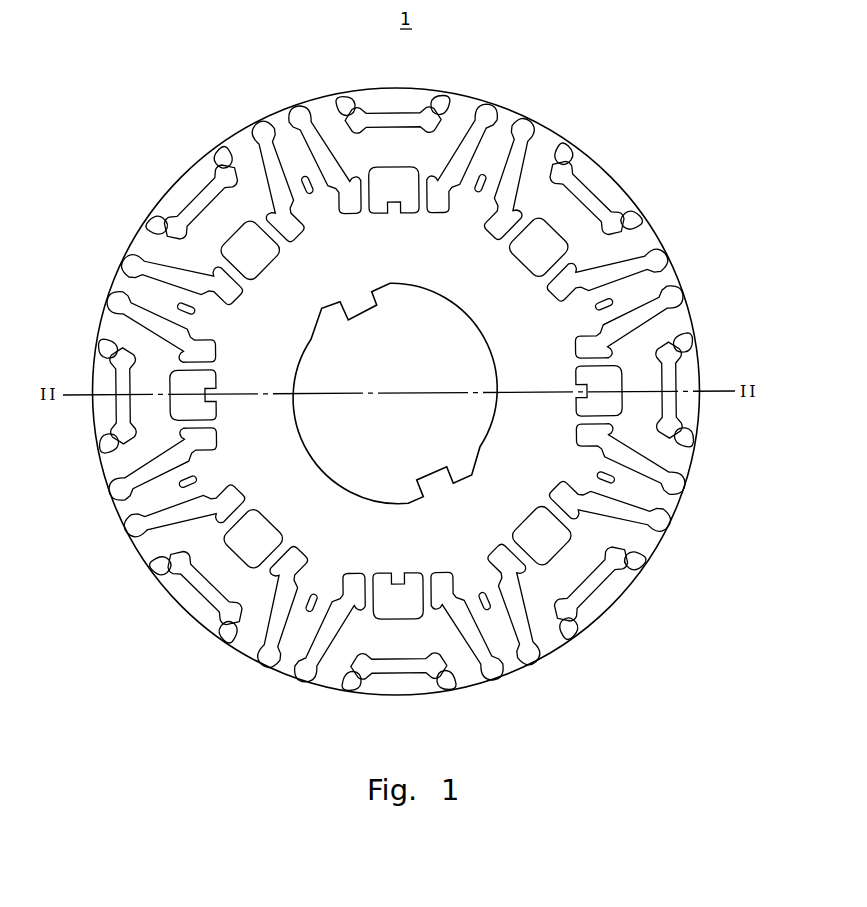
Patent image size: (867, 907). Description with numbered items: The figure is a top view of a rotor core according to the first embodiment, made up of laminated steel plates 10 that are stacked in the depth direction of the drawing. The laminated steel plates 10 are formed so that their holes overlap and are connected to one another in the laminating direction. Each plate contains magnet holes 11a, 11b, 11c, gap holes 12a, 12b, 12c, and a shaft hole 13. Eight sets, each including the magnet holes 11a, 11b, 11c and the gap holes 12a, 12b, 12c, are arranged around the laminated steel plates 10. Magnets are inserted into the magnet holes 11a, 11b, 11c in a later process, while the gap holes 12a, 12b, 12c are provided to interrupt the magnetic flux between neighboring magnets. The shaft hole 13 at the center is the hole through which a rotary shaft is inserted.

The laminated steel plates 10 is at (370, 88).
The magnet hole 11a is at (490, 205).
The magnet hole 11b is at (592, 280).
The magnet hole 11c is at (590, 197).
The gap hole 12a is at (523, 268).
The gap hole 12b is at (567, 146).
The gap hole 12c is at (640, 213).
The shaft hole 13 is at (481, 416).